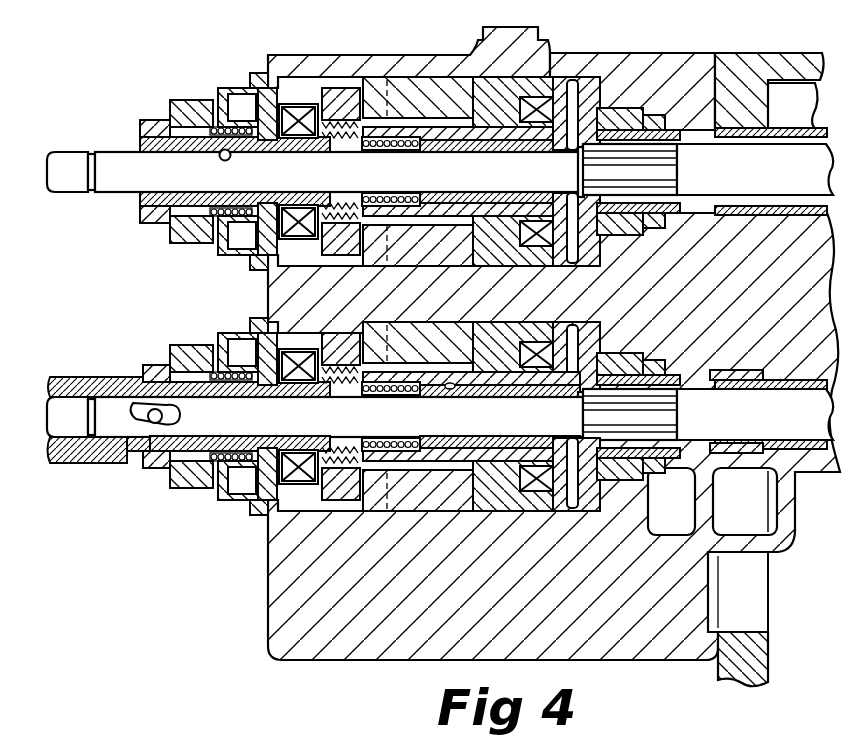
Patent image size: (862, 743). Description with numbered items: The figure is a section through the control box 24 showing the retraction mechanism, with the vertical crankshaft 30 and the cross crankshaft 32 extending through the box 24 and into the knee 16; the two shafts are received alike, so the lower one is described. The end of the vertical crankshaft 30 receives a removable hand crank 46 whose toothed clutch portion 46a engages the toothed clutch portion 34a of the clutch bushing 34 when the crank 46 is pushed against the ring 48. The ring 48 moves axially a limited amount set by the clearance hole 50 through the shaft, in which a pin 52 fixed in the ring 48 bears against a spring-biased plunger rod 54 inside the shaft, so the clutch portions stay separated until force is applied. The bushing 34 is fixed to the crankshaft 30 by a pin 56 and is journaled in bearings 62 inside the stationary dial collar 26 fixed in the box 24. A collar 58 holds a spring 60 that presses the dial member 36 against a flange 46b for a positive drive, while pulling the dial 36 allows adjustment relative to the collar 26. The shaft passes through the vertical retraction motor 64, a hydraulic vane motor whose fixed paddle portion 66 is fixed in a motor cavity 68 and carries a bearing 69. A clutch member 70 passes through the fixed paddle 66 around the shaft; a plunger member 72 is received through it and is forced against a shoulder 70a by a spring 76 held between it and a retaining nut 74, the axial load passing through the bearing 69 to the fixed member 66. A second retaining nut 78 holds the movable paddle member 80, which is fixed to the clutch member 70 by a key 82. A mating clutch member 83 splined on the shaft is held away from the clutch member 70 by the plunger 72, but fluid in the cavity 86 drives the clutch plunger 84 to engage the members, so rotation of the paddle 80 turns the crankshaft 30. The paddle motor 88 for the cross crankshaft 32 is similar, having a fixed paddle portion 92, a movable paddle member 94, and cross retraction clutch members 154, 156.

The knee 16 is at (769, 84).
The control box 24 is at (519, 591).
The stationary dial collar 26 is at (270, 500).
The vertical crankshaft 30 is at (754, 421).
The cross crankshaft 32 is at (776, 174).
The clutch bushing 34 is at (192, 488).
The toothed clutch portion 34a is at (155, 466).
The dial member 36 is at (240, 500).
The hand crank 46 is at (88, 380).
The toothed clutch portion 46a is at (156, 382).
The flange 46b is at (285, 317).
The ring 48 is at (146, 364).
The clearance hole 50 is at (149, 412).
The pin 52 is at (150, 422).
The plunger rod 54 is at (168, 412).
The pin 56 is at (233, 157).
The collar 58 is at (226, 371).
The spring 60 is at (238, 343).
The bearings 62 is at (312, 512).
The vertical retraction motor 64 is at (437, 514).
The fixed paddle portion 66 is at (510, 364).
The motor cavity 68 is at (506, 512).
The bearing 69 is at (562, 512).
The clutch member 70 is at (553, 396).
The shoulder 70a is at (446, 392).
The plunger member 72 is at (435, 399).
The retaining nut 74 is at (347, 398).
The spring 76 is at (391, 399).
The second retaining nut 78 is at (358, 501).
The movable paddle member 80 is at (430, 354).
The key 82 is at (428, 471).
The mating clutch member 83 is at (606, 511).
The clutch plunger 84 is at (641, 505).
The cavity 86 is at (646, 374).
The paddle motor 88 is at (416, 76).
The fixed paddle portion 92 is at (498, 271).
The movable paddle member 94 is at (403, 271).
The cross retraction clutch member 154 is at (540, 150).
The cross retraction clutch member 156 is at (598, 90).